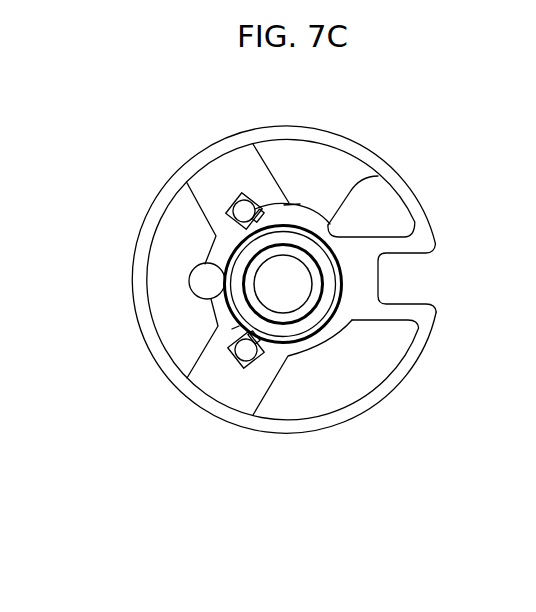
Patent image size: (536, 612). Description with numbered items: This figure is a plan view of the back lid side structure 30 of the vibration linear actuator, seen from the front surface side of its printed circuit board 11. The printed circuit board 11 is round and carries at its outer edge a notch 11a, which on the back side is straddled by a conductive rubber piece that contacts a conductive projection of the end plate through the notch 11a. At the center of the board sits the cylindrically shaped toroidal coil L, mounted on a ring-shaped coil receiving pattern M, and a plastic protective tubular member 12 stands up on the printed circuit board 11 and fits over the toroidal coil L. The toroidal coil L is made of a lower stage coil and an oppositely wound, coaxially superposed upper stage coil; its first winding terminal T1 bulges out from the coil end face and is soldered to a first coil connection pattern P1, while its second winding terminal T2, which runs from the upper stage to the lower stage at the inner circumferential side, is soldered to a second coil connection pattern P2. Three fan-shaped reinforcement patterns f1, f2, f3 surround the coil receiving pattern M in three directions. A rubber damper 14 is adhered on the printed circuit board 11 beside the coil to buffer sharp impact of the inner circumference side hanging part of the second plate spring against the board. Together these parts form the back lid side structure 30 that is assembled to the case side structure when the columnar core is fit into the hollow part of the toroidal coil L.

The back lid side structure 30 is at (167, 114).
The printed circuit board 11 is at (137, 238).
The notch 11a is at (412, 254).
The protective tubular member 12 is at (373, 178).
The rubber damper 14 is at (201, 274).
The coil receiving pattern M is at (320, 262).
The toroidal coil L is at (320, 307).
The first coil connection pattern P1 is at (256, 362).
The second coil connection pattern P2 is at (258, 206).
The first winding terminal T1 is at (236, 327).
The second winding terminal T2 is at (292, 204).
The fan-shaped reinforcement pattern f1 is at (363, 367).
The fan-shaped reinforcement pattern f2 is at (383, 207).
The fan-shaped reinforcement pattern f3 is at (173, 341).